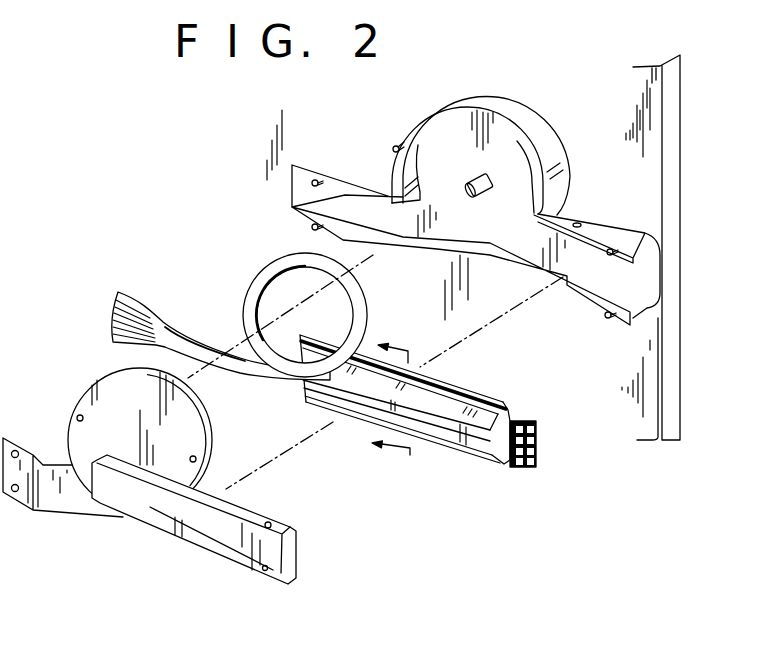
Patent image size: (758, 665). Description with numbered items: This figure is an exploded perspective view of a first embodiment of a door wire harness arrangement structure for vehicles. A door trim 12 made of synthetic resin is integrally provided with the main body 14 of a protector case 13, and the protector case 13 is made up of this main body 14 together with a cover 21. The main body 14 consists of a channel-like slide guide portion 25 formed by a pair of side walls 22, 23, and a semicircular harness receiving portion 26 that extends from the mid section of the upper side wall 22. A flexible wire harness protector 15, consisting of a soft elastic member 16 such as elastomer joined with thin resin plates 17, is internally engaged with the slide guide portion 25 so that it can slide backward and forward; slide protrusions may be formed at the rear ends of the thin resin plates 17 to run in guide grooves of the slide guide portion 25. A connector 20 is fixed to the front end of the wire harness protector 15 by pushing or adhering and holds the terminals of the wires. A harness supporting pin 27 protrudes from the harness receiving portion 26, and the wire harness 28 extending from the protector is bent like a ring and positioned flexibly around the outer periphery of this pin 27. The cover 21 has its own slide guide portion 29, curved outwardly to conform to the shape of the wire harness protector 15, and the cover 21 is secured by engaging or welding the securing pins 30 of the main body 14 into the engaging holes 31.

The door trim 12 is at (679, 157).
The protector case 13 is at (235, 177).
The main body 14 is at (476, 174).
The wire harness protector 15 is at (450, 418).
The soft elastic member 16 is at (378, 400).
The thin resin plates 17 is at (464, 388).
The connector 20 is at (537, 439).
The cover 21 is at (74, 382).
The upper side wall 22 is at (577, 222).
The side wall 23 is at (567, 282).
The slide guide portion 25 is at (604, 205).
The harness receiving portion 26 is at (493, 93).
The harness supporting pin 27 is at (483, 196).
The wire harness 28 is at (251, 374).
The slide guide portion 29 is at (242, 546).
The securing pins 30 is at (392, 148).
The engaging holes 31 is at (193, 462).